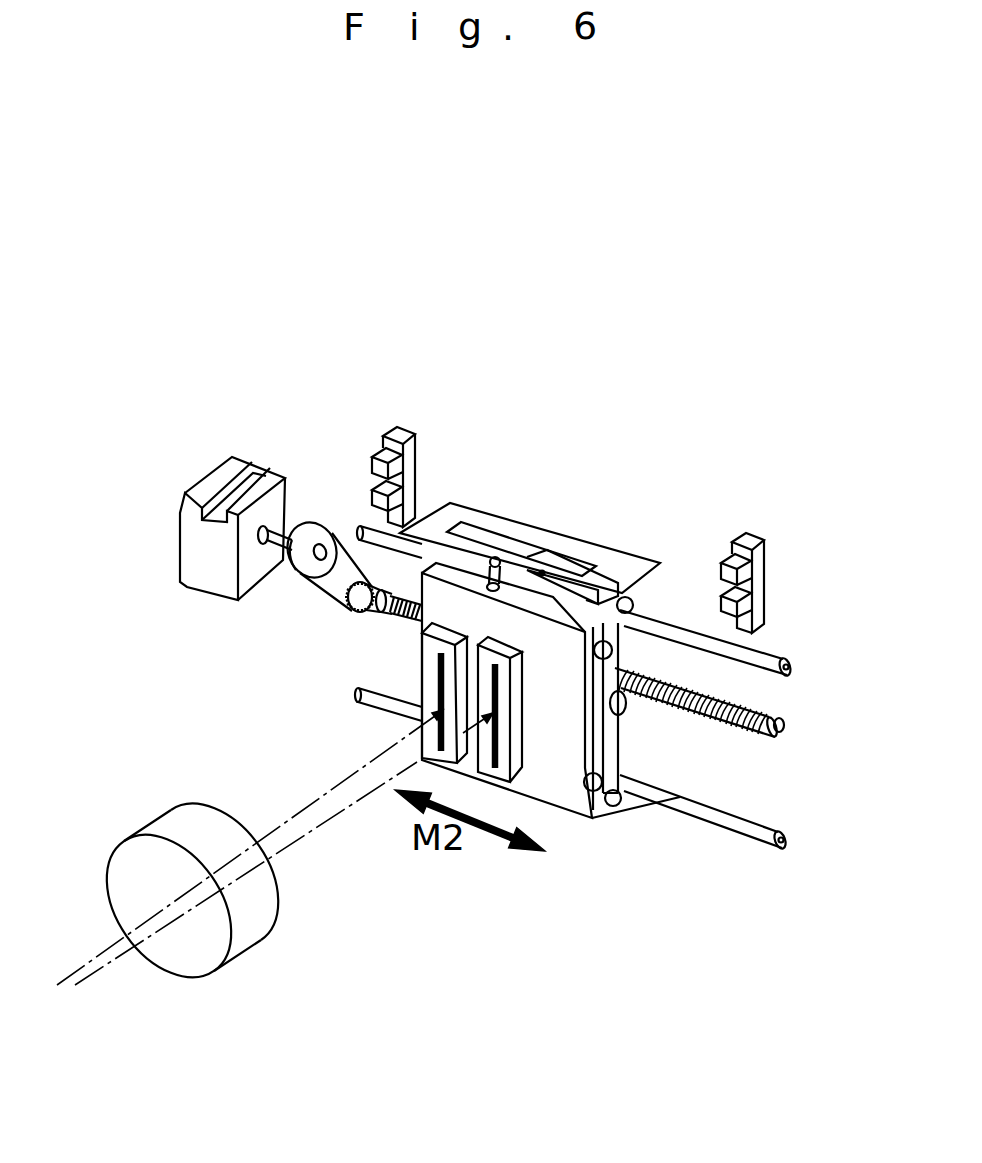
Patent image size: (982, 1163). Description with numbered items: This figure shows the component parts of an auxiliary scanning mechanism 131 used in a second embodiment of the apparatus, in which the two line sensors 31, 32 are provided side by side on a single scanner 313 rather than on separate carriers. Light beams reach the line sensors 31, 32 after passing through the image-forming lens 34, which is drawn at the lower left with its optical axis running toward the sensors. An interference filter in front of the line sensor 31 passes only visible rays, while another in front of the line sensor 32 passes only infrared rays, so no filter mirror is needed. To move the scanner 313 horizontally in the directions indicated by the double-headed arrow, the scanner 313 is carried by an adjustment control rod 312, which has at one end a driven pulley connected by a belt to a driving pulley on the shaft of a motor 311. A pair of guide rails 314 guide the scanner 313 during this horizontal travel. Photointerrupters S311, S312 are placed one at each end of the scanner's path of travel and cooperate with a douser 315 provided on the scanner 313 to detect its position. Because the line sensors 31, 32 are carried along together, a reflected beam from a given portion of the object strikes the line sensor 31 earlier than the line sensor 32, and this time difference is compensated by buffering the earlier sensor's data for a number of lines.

The auxiliary scanning mechanism 131 is at (635, 282).
The motor 311 is at (203, 490).
The photointerrupter S311 is at (397, 427).
The photointerrupter S312 is at (745, 535).
The line sensor 31 is at (422, 673).
The scanner 313 is at (547, 640).
The douser 315 is at (628, 568).
The line sensor 32 is at (505, 742).
The guide rails 314 is at (782, 648).
The adjustment control rod 312 is at (722, 733).
The image-forming lens 34 is at (180, 810).